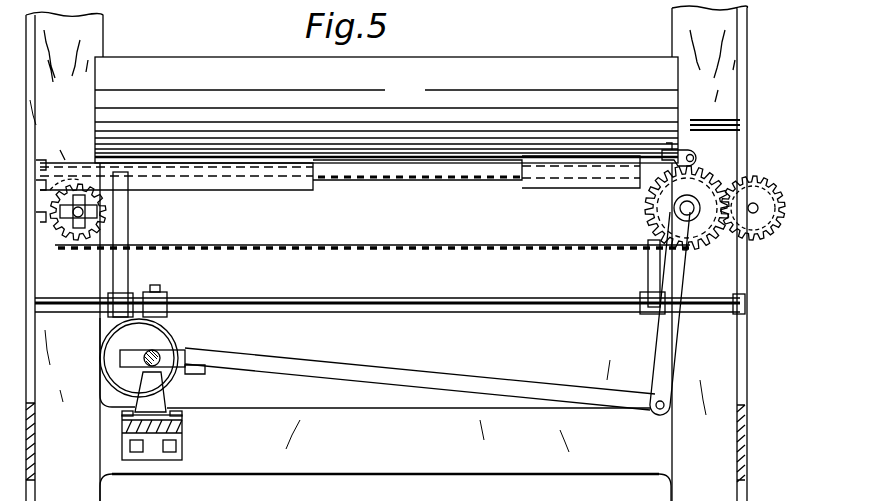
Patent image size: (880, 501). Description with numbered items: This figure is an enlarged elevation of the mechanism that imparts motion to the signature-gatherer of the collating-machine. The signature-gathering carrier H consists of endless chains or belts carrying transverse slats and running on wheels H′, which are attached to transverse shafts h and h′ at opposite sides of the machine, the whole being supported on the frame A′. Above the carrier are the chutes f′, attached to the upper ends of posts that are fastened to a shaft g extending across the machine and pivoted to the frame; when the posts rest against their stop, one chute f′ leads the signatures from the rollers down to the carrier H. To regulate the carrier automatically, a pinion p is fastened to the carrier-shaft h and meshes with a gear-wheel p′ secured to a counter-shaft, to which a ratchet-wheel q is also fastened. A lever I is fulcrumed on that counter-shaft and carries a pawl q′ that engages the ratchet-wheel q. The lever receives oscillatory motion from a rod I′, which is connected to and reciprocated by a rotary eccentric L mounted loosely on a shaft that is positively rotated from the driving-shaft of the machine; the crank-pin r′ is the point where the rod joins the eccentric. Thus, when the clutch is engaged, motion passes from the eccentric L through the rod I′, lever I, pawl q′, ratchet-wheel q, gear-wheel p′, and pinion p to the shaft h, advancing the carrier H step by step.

The chute f′ is at (386, 110).
The signature-gathering carrier H is at (390, 197).
The carrier-shaft h is at (757, 202).
The carrier-shaft h′ is at (83, 213).
The wheel H′ is at (74, 246).
The ratchet-wheel q is at (668, 178).
The pawl q′ is at (648, 203).
The pinion p is at (772, 232).
The gear-wheel p′ is at (650, 215).
The lever I is at (670, 313).
The rod I′ is at (437, 376).
The rotary eccentric L is at (141, 389).
The crank pin r′ is at (147, 370).
The shaft g is at (458, 290).
The frame A′ is at (380, 443).